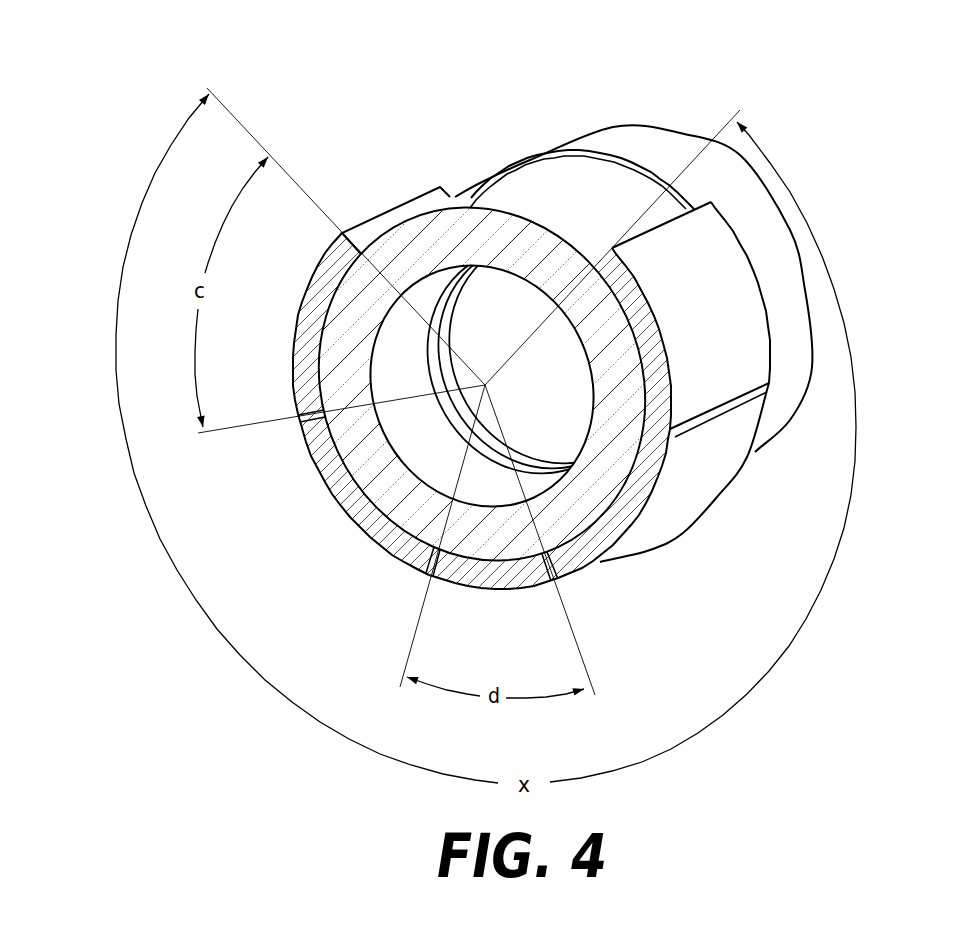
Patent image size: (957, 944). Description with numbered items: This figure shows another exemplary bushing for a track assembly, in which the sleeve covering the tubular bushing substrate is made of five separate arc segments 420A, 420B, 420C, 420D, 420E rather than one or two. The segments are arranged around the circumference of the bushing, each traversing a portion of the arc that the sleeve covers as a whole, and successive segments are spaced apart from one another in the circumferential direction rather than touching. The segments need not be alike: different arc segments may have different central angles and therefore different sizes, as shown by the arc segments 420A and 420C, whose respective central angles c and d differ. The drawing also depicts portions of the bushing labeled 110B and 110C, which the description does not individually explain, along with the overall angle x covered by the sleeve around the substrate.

The intermediate annular portion 110B is at (513, 197).
The cylindrical body portion 110C is at (657, 148).
The arc segment 420A is at (393, 217).
The arc segment 420B is at (340, 488).
The arc segment 420C is at (482, 577).
The arc segment 420D is at (702, 495).
The arc segment 420E is at (742, 340).